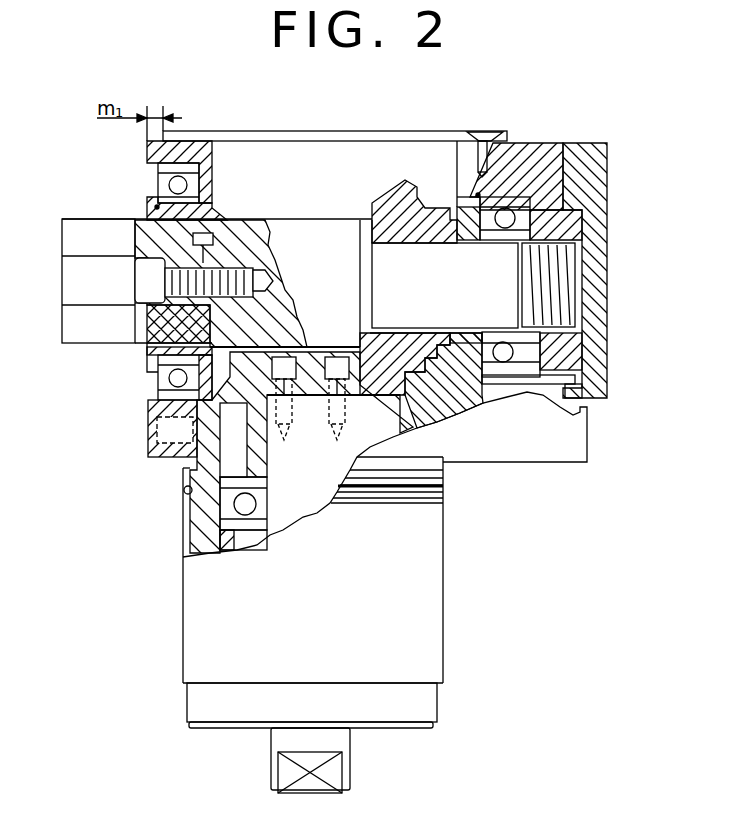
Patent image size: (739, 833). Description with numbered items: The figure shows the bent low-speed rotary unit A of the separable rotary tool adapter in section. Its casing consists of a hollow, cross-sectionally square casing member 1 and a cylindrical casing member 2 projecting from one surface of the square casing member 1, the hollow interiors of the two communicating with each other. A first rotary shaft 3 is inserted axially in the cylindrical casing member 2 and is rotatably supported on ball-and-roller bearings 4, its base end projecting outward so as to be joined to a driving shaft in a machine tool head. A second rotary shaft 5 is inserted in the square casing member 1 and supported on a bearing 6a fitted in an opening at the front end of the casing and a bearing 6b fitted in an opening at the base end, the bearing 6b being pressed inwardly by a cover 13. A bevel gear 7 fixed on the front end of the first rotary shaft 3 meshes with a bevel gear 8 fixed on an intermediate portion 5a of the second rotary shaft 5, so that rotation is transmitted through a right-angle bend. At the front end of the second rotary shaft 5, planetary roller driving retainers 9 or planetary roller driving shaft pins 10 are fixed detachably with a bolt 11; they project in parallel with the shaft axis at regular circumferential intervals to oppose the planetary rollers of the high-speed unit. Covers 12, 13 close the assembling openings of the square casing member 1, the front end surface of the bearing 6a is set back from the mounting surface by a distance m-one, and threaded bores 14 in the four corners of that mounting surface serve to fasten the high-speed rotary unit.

The square casing member 1 is at (485, 422).
The cylindrical casing member 2 is at (378, 609).
The first rotary shaft 3 is at (305, 501).
The ball-and-roller bearings 4 is at (245, 504).
The second rotary shaft 5 is at (322, 247).
The intermediate portion 5a is at (451, 306).
The bearing 6a is at (178, 185).
The bearing 6b is at (505, 218).
The bevel gear 7 is at (245, 393).
The bevel gear 8 is at (417, 207).
The planetary roller driving retainers 9 is at (113, 247).
The planetary roller driving shaft pins 10 is at (98, 280).
The bolt 11 is at (157, 357).
The cover 12 is at (350, 140).
The cover 13 is at (587, 180).
The threaded bores 14 is at (157, 428).
The bent low-speed rotary unit A is at (110, 138).